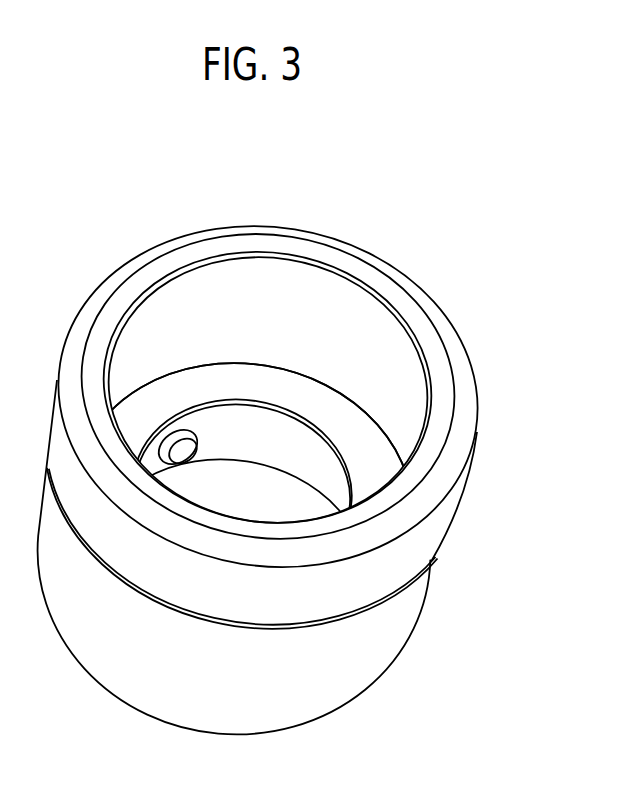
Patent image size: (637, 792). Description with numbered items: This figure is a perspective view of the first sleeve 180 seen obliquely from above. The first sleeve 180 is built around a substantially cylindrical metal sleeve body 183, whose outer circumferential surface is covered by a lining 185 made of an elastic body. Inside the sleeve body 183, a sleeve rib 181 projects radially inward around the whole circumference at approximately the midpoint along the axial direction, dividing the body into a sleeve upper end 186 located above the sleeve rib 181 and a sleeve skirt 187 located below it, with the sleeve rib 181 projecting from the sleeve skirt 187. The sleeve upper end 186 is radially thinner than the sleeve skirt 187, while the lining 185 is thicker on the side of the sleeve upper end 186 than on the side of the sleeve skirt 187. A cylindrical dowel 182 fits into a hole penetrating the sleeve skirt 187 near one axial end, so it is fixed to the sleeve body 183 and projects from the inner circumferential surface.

The first sleeve 180 is at (282, 462).
The sleeve rib 181 is at (370, 438).
The dowel 182 is at (195, 455).
The sleeve body 183 is at (329, 300).
The lining 185 is at (457, 333).
The sleeve upper end 186 is at (373, 366).
The sleeve skirt 187 is at (295, 456).